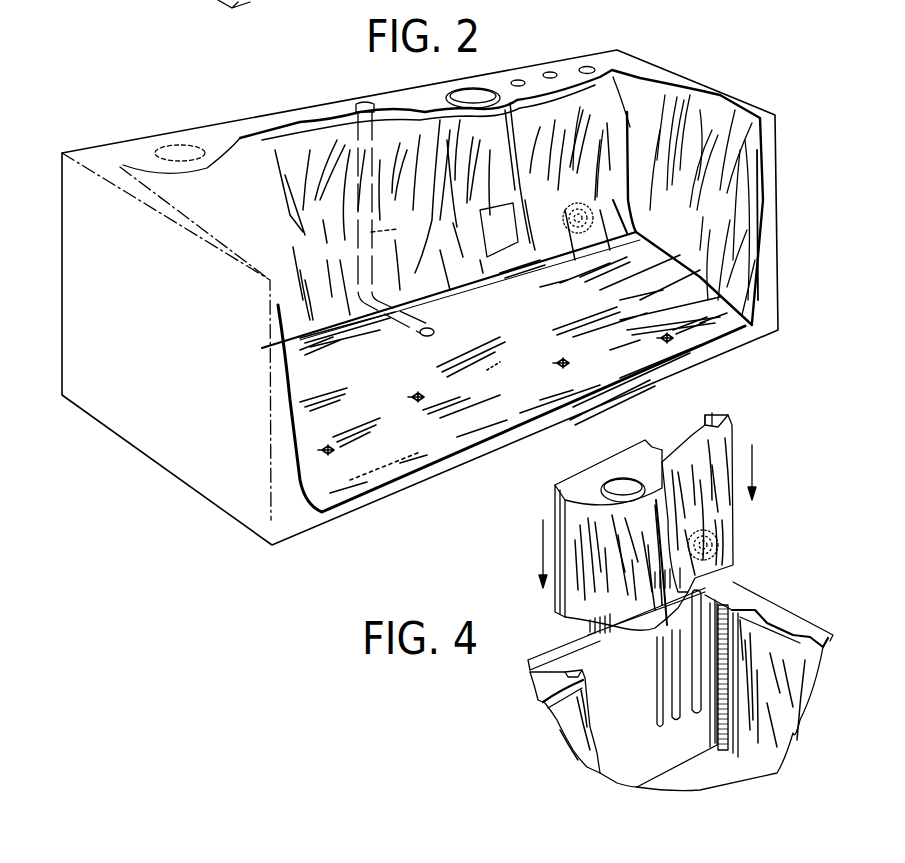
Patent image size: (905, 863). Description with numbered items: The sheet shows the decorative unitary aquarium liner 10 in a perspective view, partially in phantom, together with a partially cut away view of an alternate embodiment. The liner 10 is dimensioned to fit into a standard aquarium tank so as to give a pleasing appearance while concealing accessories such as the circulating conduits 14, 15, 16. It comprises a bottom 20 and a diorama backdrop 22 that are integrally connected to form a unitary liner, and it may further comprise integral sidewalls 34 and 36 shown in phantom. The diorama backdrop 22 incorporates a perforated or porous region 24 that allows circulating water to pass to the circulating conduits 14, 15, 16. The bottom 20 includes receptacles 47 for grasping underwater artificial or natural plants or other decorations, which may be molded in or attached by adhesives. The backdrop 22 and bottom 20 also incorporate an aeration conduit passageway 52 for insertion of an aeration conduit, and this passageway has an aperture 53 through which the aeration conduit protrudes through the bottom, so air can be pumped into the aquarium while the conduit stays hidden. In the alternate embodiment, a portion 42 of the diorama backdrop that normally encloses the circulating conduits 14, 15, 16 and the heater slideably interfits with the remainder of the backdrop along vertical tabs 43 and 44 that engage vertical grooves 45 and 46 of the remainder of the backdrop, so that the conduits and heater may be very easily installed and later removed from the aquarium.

In FIG. 2, the decorative unitary aquarium liner 10 is at (312, 150).
In FIG. 2, the diorama backdrop 22 is at (387, 110).
In FIG. 2, the integral sidewall 34 is at (168, 212).
In FIG. 2, the integral sidewall 36 is at (695, 90).
In FIG. 2, the aeration conduit passageway 52 is at (397, 230).
In FIG. 2, the aperture 53 is at (434, 331).
In FIG. 2, the receptacles 47 is at (408, 396).
In FIG. 2, the bottom 20 is at (634, 362).
In FIG. 4, the vertical tab 43 is at (562, 515).
In FIG. 4, the portion of the diorama backdrop 42 is at (720, 452).
In FIG. 4, the vertical tab 44 is at (730, 415).
In FIG. 4, the perforated or porous region 24 is at (718, 545).
In FIG. 4, the vertical groove 46 is at (723, 603).
In FIG. 4, the vertical groove 45 is at (565, 671).
In FIG. 4, the circulating conduit 16 is at (657, 655).
In FIG. 4, the circulating conduit 15 is at (675, 668).
In FIG. 4, the circulating conduit 14 is at (695, 720).